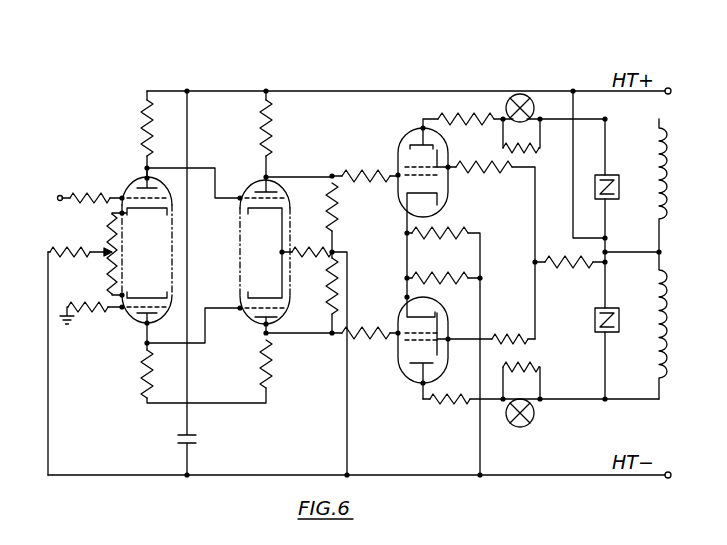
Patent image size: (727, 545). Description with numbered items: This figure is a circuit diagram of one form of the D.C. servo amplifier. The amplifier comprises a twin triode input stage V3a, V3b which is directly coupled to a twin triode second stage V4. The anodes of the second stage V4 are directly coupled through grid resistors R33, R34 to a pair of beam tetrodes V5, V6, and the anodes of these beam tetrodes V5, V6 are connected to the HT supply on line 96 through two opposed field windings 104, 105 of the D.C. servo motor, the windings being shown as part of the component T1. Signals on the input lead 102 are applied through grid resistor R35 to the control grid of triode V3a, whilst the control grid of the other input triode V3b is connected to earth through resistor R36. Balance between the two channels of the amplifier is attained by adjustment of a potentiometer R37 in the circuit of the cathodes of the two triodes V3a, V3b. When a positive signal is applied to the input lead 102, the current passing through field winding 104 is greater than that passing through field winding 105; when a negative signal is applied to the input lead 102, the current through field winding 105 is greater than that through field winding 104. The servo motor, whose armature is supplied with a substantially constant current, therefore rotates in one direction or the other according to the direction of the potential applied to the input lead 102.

The HT supply line 96 is at (438, 90).
The input lead 102 is at (59, 195).
The field winding 104 is at (656, 179).
The field winding 105 is at (656, 312).
The grid resistor R33 is at (365, 164).
The grid resistor R34 is at (365, 322).
The grid resistor R35 is at (92, 188).
The resistor R36 is at (91, 303).
The potentiometer R37 is at (109, 236).
The input triode V3a is at (138, 224).
The input triode V3b is at (135, 317).
The twin triode second stage V4 is at (258, 246).
The beam tetrode V5 is at (439, 208).
The beam tetrode V6 is at (437, 348).
The transformer T1 is at (680, 398).